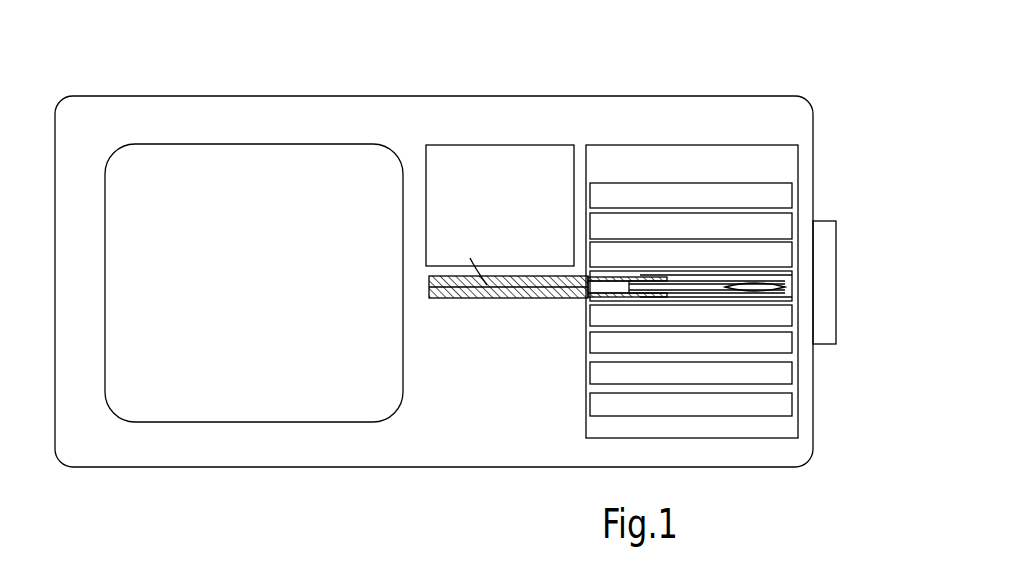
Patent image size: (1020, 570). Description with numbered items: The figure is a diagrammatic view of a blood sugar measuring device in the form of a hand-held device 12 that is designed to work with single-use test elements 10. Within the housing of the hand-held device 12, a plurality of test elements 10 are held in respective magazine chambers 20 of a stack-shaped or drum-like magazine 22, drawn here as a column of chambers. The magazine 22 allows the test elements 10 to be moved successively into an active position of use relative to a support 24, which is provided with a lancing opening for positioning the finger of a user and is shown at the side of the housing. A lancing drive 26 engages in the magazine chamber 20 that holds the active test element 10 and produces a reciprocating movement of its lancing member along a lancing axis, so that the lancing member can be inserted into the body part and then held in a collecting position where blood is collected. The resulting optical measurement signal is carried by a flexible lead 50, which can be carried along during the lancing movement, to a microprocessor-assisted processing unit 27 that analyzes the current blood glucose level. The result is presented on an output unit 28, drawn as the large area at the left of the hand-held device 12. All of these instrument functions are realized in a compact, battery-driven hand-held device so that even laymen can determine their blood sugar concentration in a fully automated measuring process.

The test element 10 is at (786, 303).
The hand-held device 12 is at (553, 95).
The magazine chamber 20 is at (775, 227).
The magazine 22 is at (677, 145).
The support 24 is at (827, 238).
The lancing drive 26 is at (457, 299).
The processing unit 27 is at (517, 205).
The output unit 28 is at (259, 300).
The flexible lead 50 is at (530, 288).